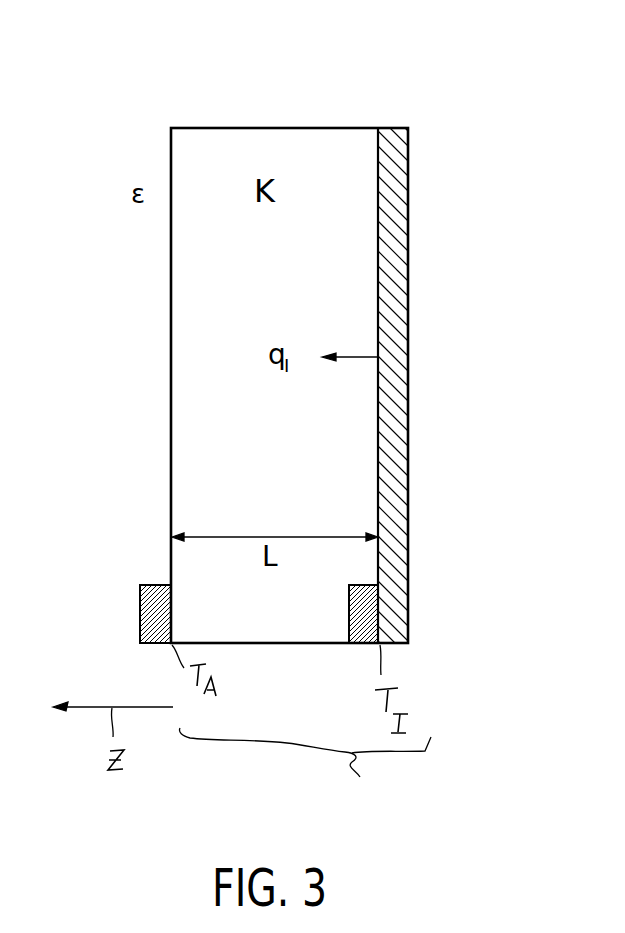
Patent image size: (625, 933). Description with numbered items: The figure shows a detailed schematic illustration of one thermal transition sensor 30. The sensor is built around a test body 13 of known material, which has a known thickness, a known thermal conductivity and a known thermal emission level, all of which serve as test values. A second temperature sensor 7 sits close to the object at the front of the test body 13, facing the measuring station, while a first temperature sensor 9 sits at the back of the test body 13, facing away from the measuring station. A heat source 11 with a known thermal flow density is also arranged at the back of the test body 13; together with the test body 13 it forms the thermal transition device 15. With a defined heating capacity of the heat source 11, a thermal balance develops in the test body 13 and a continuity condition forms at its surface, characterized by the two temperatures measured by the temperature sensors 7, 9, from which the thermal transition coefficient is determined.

The thermal transition sensor 30 is at (433, 82).
The test body 13 is at (183, 133).
The heat source 11 is at (398, 300).
The second temperature sensor 7 is at (140, 616).
The first temperature sensor 9 is at (348, 626).
The thermal transition device 15 is at (385, 826).